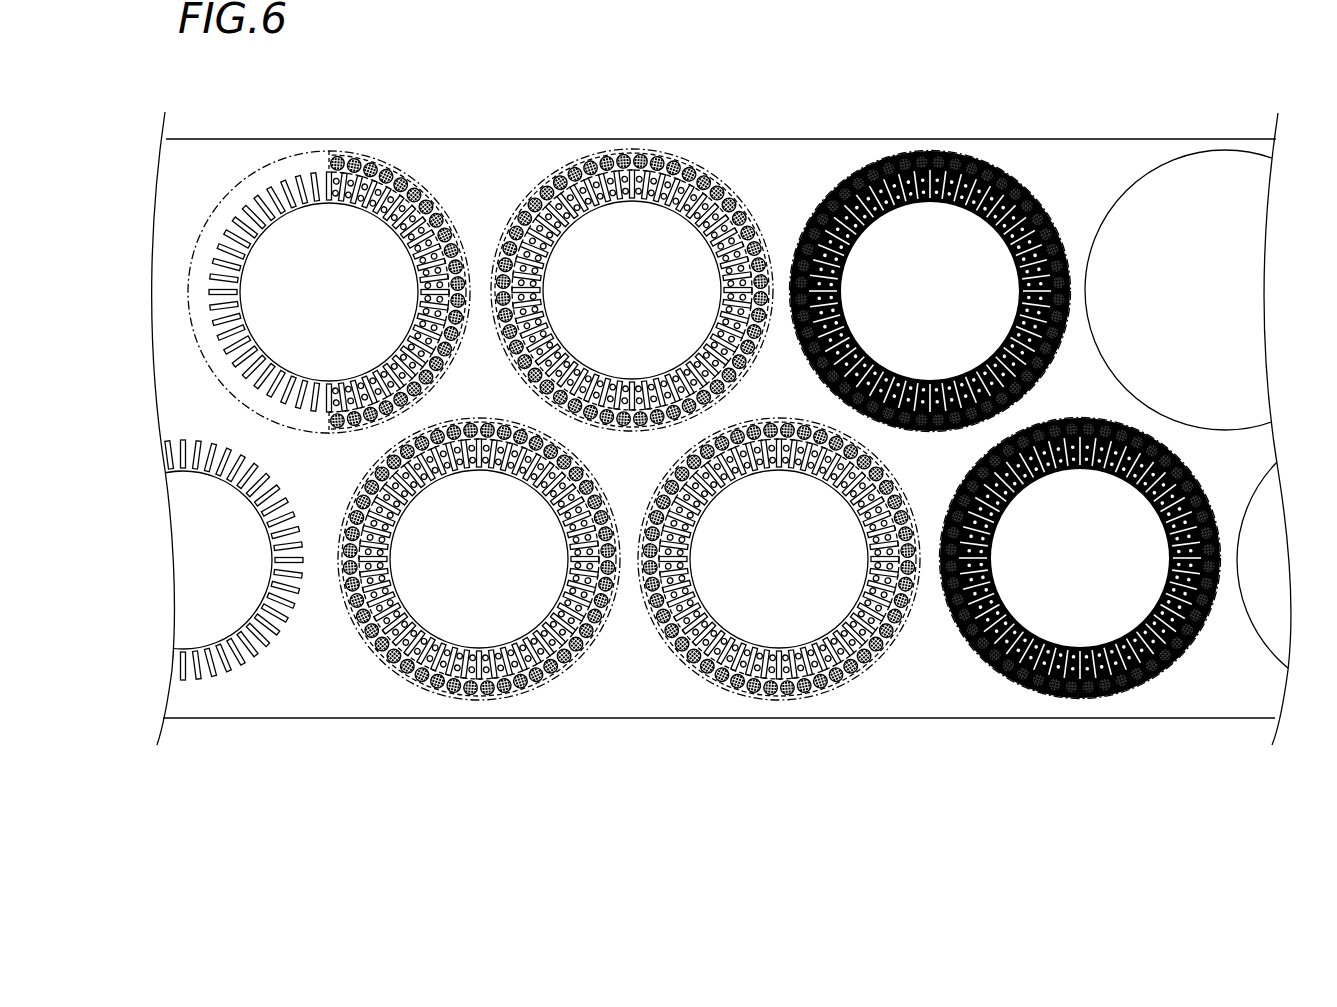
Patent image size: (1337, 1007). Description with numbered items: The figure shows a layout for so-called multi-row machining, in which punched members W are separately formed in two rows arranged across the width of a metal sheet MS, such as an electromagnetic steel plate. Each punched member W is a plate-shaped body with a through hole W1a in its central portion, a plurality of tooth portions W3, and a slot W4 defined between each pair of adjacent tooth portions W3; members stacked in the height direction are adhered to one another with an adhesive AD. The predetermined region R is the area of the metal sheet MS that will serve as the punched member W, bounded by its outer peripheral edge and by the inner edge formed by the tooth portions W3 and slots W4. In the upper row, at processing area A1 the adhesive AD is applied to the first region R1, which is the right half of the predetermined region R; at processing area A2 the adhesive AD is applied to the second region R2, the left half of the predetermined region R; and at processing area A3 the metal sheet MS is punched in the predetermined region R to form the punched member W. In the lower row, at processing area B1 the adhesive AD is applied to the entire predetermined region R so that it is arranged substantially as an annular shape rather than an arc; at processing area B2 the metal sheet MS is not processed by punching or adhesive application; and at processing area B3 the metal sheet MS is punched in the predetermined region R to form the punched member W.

The metal sheet MS is at (197, 138).
The processing area in the upper row A1 is at (329, 244).
The processing area in the upper row A2 is at (632, 243).
The processing area in the upper row A3 is at (930, 244).
The processing area in the lower row B1 is at (479, 609).
The processing area in the lower row B2 is at (779, 609).
The processing area in the lower row B3 is at (1080, 610).
The through hole W1a is at (307, 226).
The tooth portion W3 is at (242, 266).
The slot W4 is at (218, 297).
The adhesive AD is at (415, 192).
The first region R1 is at (336, 150).
The second region R2 is at (617, 150).
The predetermined region R is at (381, 156).
The punched member W is at (985, 157).